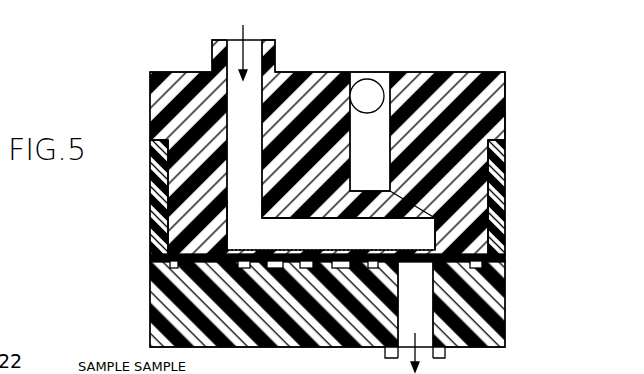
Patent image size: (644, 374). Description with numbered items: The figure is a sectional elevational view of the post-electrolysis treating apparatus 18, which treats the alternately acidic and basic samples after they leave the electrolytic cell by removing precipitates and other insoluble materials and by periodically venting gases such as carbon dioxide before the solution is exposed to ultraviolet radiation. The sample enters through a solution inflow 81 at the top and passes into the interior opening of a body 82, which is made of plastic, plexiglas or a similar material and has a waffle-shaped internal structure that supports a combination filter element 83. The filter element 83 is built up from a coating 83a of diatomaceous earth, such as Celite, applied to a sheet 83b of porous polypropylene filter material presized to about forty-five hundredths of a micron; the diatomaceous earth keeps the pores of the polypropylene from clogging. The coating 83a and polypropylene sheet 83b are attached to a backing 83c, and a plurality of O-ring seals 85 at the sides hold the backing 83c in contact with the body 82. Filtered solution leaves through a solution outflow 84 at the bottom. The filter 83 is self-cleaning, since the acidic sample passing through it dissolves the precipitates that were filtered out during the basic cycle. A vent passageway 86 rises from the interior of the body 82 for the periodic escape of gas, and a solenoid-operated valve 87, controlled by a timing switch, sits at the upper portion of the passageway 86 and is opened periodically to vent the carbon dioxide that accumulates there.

The post-electrolysis treating apparatus 18 is at (567, 82).
The solution inflow 81 is at (251, 42).
The body 82 is at (404, 73).
The combination filter element 83 is at (420, 263).
The coating of diatomaceous earth 83a is at (318, 250).
The polypropylene sheet 83b is at (255, 251).
The backing 83c is at (223, 270).
The solution outflow 84 is at (385, 348).
The O-ring seals 85 is at (158, 248).
The vent passageway 86 is at (384, 135).
The solenoid-operated valve 87 is at (356, 84).